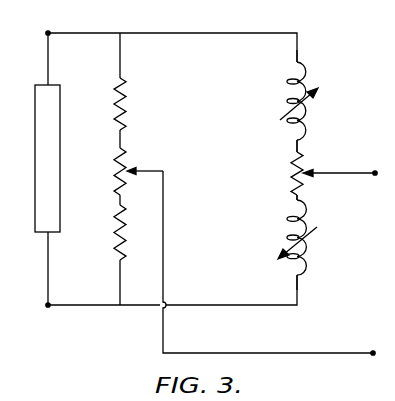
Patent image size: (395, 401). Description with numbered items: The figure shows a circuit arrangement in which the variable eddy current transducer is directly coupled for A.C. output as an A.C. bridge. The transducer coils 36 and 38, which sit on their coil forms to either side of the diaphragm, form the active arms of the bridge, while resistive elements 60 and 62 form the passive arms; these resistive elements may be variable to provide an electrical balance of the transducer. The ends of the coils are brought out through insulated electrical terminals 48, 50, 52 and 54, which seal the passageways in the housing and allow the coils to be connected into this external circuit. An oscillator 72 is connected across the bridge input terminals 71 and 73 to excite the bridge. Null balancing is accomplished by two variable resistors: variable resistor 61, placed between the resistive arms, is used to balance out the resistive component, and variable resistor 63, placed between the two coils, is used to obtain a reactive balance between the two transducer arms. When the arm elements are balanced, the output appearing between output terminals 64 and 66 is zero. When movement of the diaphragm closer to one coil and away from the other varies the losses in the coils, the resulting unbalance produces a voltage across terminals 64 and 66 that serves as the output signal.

The bridge input terminal 71 is at (53, 24).
The oscillator 72 is at (61, 201).
The bridge input terminal 73 is at (47, 308).
The resistive element 60 is at (128, 104).
The variable resistor 61 is at (128, 161).
The resistive element 62 is at (125, 242).
The insulated electrical terminal 48 is at (299, 57).
The transducer coil 36 is at (305, 116).
The insulated electrical terminal 50 is at (300, 152).
The variable resistor 63 is at (292, 172).
The output terminal 64 is at (373, 178).
The insulated electrical terminal 52 is at (300, 196).
The transducer coil 38 is at (305, 244).
The insulated electrical terminal 54 is at (300, 284).
The output terminal 66 is at (376, 343).